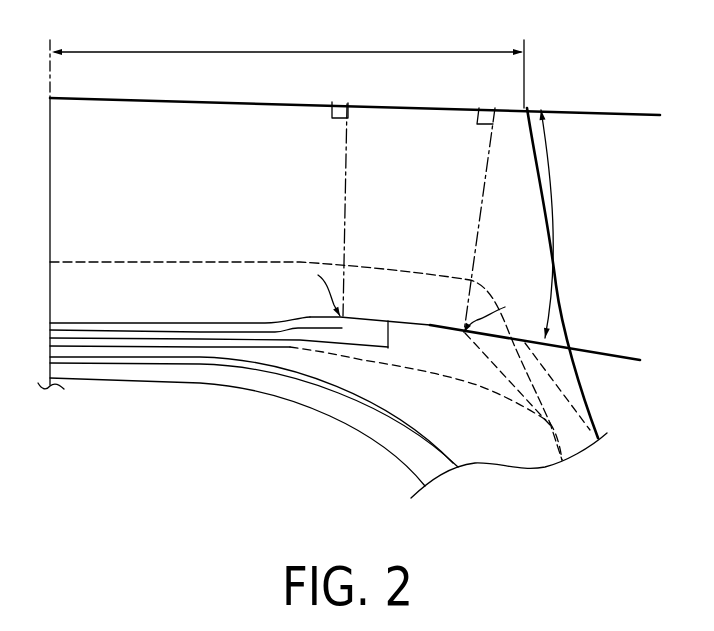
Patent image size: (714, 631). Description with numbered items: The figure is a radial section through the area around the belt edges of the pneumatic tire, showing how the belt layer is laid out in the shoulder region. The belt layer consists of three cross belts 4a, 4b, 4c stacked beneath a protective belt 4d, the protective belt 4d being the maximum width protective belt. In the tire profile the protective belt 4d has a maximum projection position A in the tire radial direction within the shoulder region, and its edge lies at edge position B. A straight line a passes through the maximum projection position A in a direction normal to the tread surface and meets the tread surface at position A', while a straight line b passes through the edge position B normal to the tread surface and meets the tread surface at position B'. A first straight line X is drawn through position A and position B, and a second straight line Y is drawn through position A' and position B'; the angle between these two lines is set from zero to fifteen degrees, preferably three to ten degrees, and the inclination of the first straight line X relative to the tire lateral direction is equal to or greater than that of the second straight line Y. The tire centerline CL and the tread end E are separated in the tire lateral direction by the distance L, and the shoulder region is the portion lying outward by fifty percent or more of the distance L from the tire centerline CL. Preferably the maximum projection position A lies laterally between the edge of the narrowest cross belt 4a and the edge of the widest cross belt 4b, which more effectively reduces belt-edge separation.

The tire centerline CL is at (50, 55).
The distance L is at (287, 39).
The position A' is at (365, 68).
The position B' is at (511, 71).
The straight line a is at (348, 155).
The straight line b is at (487, 176).
The tread end E is at (524, 108).
The second straight line Y is at (637, 112).
The first straight line X is at (600, 349).
The maximum projection position A is at (319, 289).
The edge position B is at (490, 306).
The cross belt 4a is at (212, 346).
The cross belt 4b is at (388, 322).
The cross belt 4c is at (293, 328).
The protective belt 4d is at (372, 318).